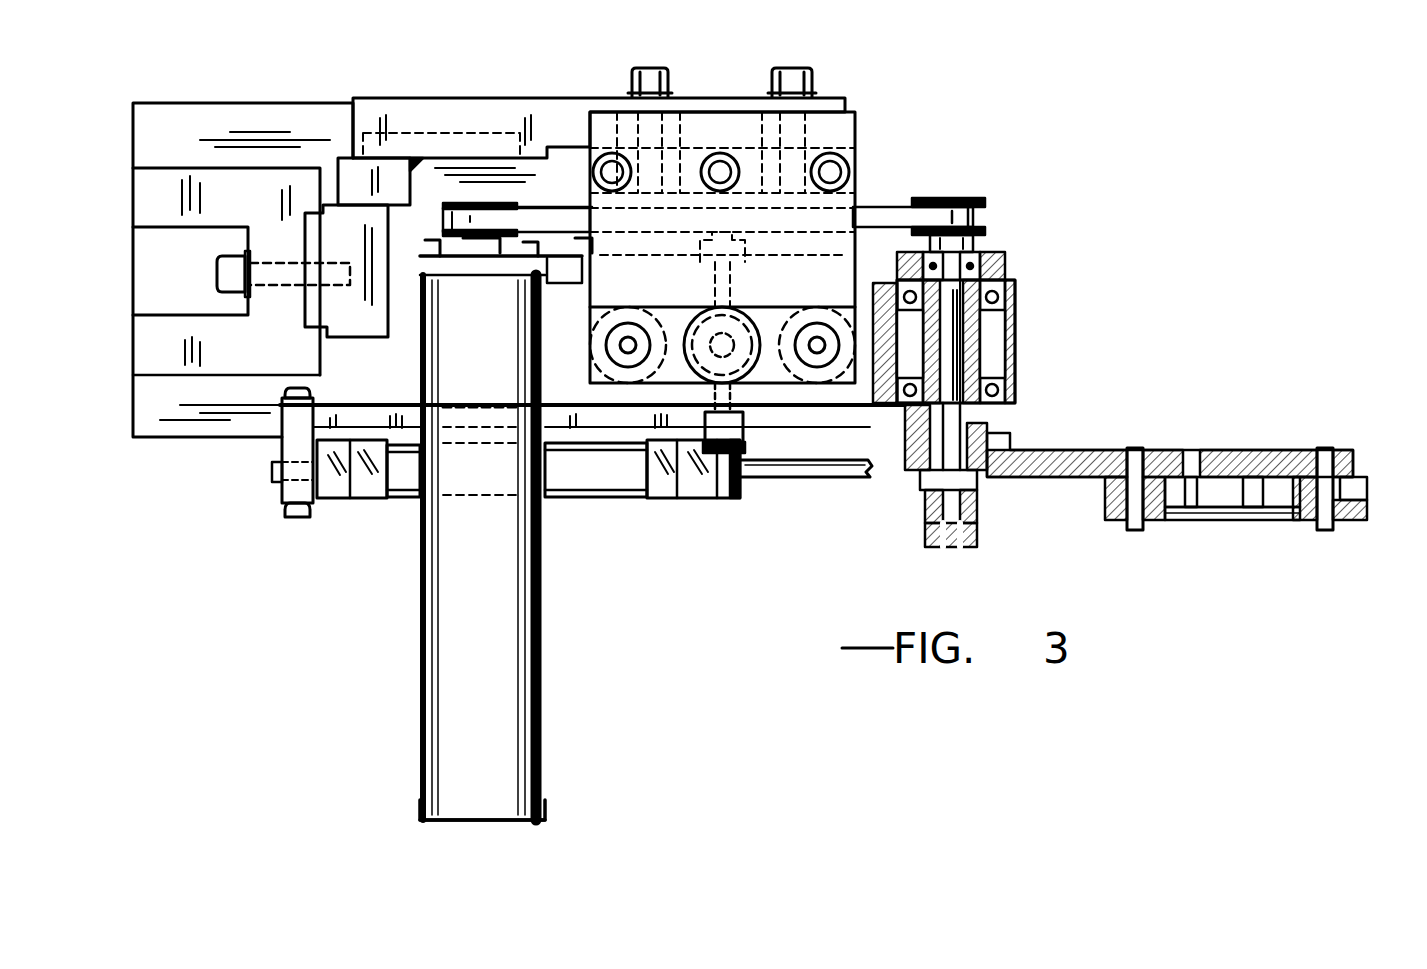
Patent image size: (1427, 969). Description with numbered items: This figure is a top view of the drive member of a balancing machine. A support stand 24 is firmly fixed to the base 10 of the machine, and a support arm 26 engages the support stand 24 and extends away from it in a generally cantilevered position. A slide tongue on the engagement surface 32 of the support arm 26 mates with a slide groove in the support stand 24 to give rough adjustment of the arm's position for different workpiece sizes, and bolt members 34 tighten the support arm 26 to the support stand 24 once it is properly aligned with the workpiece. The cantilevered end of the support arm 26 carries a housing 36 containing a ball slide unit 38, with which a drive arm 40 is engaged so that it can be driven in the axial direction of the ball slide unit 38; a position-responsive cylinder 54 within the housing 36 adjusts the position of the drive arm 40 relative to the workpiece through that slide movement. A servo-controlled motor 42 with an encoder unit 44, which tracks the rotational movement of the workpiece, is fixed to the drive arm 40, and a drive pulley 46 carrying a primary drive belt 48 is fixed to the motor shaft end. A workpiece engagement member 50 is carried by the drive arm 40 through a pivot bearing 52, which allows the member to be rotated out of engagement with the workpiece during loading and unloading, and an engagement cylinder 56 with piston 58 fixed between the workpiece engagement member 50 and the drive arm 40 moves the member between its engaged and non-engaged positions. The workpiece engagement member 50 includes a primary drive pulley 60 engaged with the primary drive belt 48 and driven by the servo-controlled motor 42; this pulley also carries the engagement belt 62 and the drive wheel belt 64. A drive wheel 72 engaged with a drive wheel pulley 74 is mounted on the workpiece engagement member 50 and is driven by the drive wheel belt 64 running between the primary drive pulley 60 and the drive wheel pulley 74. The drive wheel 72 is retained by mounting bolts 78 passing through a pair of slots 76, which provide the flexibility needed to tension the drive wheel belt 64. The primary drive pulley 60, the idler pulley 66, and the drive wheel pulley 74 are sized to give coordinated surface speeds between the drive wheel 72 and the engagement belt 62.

The base 10 is at (160, 422).
The support stand 24 is at (157, 348).
The support arm 26 is at (375, 117).
The engagement surface 32 is at (302, 310).
The bolt members 34 is at (217, 280).
The housing 36 is at (853, 180).
The ball slide unit 38 is at (620, 352).
The drive arm 40 is at (867, 283).
The servo-controlled motor 42 is at (420, 587).
The encoder unit 44 is at (477, 810).
The drive pulley 46 is at (472, 203).
The primary drive belt 48 is at (553, 213).
The workpiece engagement member 50 is at (1283, 452).
The pivot bearing 52 is at (988, 337).
The position-responsive cylinder 54 is at (743, 332).
The engagement cylinder 56 is at (592, 497).
The piston 58 is at (778, 478).
The primary drive pulley 60 is at (987, 200).
The engagement belt 62 is at (1243, 520).
The drive wheel belt 64 is at (1030, 450).
The idler pulley 66 is at (1367, 520).
The drive wheel 72 is at (1190, 520).
The drive wheel pulley 74 is at (1177, 448).
The slots 76 is at (1062, 497).
The mounting bolts 78 is at (1080, 503).